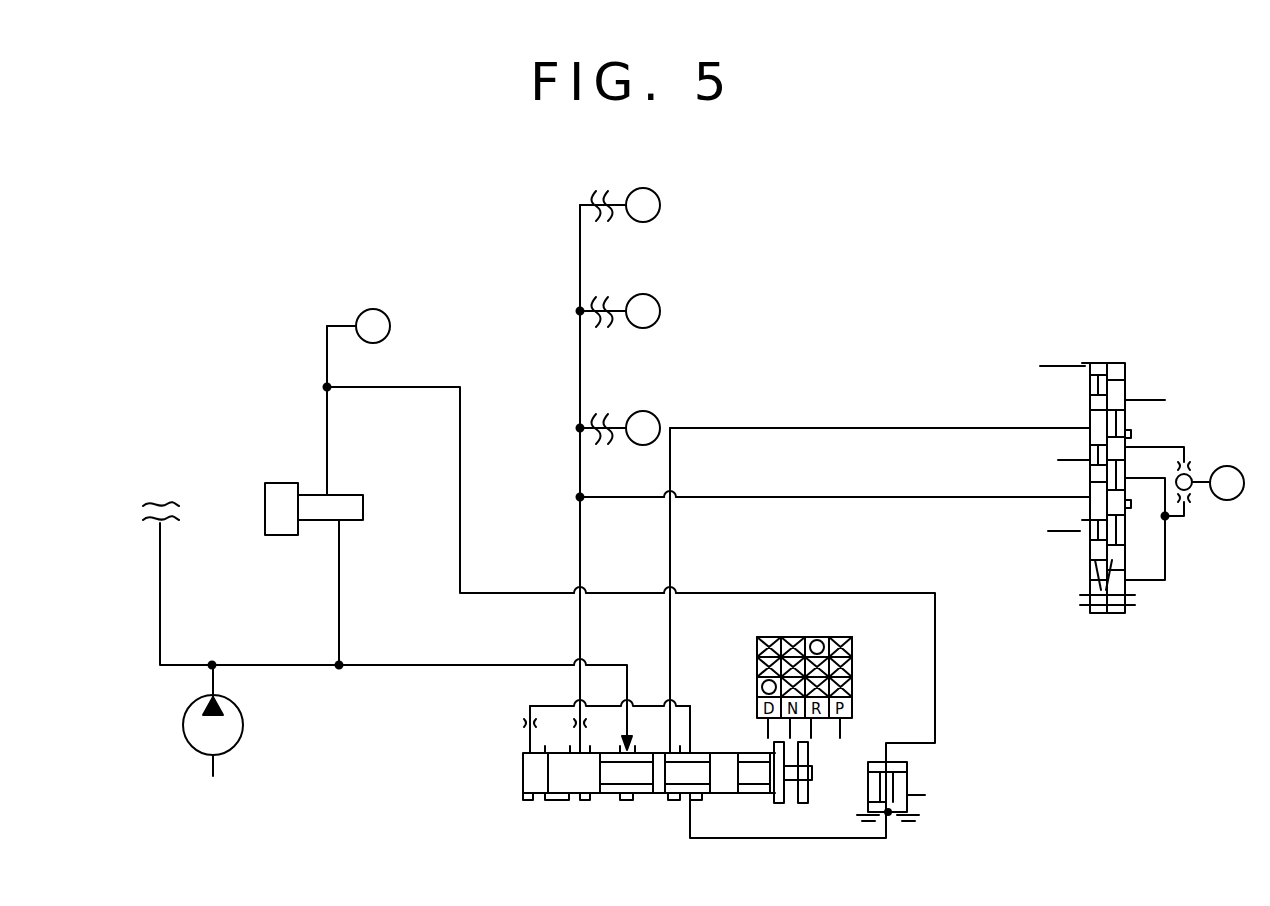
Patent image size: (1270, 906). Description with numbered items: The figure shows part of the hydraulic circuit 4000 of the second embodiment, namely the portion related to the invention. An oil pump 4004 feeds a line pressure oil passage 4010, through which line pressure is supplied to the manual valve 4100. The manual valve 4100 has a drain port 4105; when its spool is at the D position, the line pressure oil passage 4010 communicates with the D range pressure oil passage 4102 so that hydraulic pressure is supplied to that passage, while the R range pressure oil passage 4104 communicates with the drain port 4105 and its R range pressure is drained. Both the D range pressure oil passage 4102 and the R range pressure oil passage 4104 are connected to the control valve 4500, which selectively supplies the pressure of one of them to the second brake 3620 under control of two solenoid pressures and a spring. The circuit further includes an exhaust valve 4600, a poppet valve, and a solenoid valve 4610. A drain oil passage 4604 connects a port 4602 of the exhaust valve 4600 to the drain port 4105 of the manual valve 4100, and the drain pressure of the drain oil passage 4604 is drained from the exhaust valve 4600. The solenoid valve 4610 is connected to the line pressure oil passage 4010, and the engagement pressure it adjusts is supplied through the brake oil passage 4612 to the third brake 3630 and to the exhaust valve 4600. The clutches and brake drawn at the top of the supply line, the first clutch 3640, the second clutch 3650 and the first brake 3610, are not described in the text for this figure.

The hydraulic circuit 4000 is at (845, 157).
The clutch C1 3640 is at (637, 185).
The clutch C2 3650 is at (637, 291).
The brake B1 3610 is at (637, 408).
The B3 brake 3630 is at (363, 308).
The B2 brake 3620 is at (1220, 508).
The solenoid valve 4610 is at (275, 483).
The B3 oil passage 4612 is at (330, 447).
The line pressure oil passage 4010 is at (245, 665).
The oil pump 4004 is at (243, 712).
The manual valve 4100 is at (510, 780).
The D range pressure oil passage 4102 is at (960, 497).
The R range pressure oil passage 4104 is at (970, 428).
The drain port 4105 is at (700, 804).
The B2 control valve 4500 is at (1142, 372).
The exhaust valve 4600 is at (945, 773).
The drain oil passage 4604 is at (740, 838).
The port 4602 is at (902, 830).